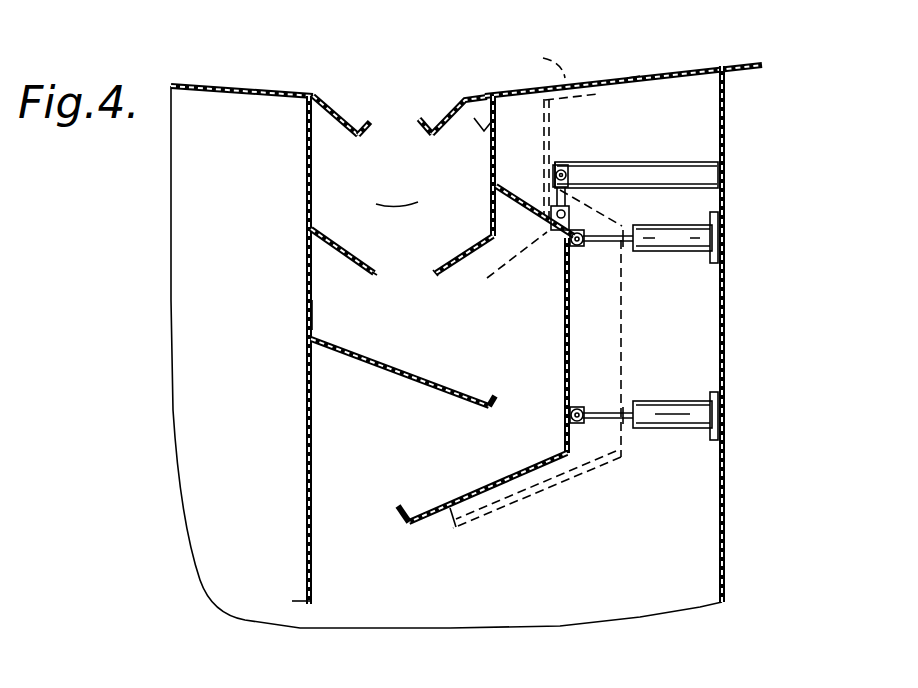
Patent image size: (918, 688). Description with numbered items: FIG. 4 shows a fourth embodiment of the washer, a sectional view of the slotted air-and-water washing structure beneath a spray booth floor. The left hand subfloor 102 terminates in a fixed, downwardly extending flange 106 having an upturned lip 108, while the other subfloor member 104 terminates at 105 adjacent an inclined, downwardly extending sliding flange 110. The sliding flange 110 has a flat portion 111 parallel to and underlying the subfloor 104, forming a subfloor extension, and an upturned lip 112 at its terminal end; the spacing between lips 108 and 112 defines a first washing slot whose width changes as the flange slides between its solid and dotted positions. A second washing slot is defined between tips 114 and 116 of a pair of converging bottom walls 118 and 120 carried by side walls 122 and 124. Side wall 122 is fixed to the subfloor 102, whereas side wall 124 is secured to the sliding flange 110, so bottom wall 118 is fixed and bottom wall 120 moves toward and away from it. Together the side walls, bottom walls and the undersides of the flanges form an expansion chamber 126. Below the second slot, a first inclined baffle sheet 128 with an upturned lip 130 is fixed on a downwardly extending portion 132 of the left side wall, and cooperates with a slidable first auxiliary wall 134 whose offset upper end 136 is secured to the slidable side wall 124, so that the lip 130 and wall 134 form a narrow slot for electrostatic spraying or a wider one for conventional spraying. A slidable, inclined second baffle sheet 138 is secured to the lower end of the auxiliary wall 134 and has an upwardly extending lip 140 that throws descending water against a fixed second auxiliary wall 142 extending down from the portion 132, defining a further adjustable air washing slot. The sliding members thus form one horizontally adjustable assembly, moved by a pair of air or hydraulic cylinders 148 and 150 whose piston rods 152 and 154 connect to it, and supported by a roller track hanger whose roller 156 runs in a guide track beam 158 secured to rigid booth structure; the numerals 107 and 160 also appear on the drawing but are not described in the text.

The left hand subfloor 102 is at (246, 86).
The subfloor member 104 is at (623, 80).
The subfloor termination 105 is at (470, 100).
The fixed downwardly extending flange 106 is at (336, 104).
The top plate portion 107 is at (627, 78).
The upturned lip 108 is at (365, 126).
The sliding flange 110 is at (444, 118).
The flat portion 111 is at (497, 95).
The upturned lip 112 is at (424, 126).
The tip 114 is at (376, 273).
The tip 116 is at (434, 272).
The bottom wall 118 is at (338, 250).
The bottom wall 120 is at (453, 256).
The side wall 122 is at (312, 156).
The side wall 124 is at (490, 160).
The expansion chamber 126 is at (398, 191).
The first inclined baffle sheet 128 is at (370, 357).
The upturned lip 130 is at (492, 394).
The downwardly extending portion 132 is at (312, 315).
The first auxiliary wall 134 is at (564, 338).
The upper end of auxiliary wall 136 is at (519, 192).
The second baffle sheet 138 is at (503, 480).
The upwardly extending lip 140 is at (398, 508).
The second auxiliary wall 142 is at (312, 433).
The cylinder 148 is at (670, 242).
The cylinder 150 is at (663, 429).
The piston rod 152 is at (603, 246).
The piston rod 154 is at (590, 408).
The roller 156 is at (565, 165).
The guide track beam 158 is at (682, 142).
The rear wall 160 is at (727, 298).